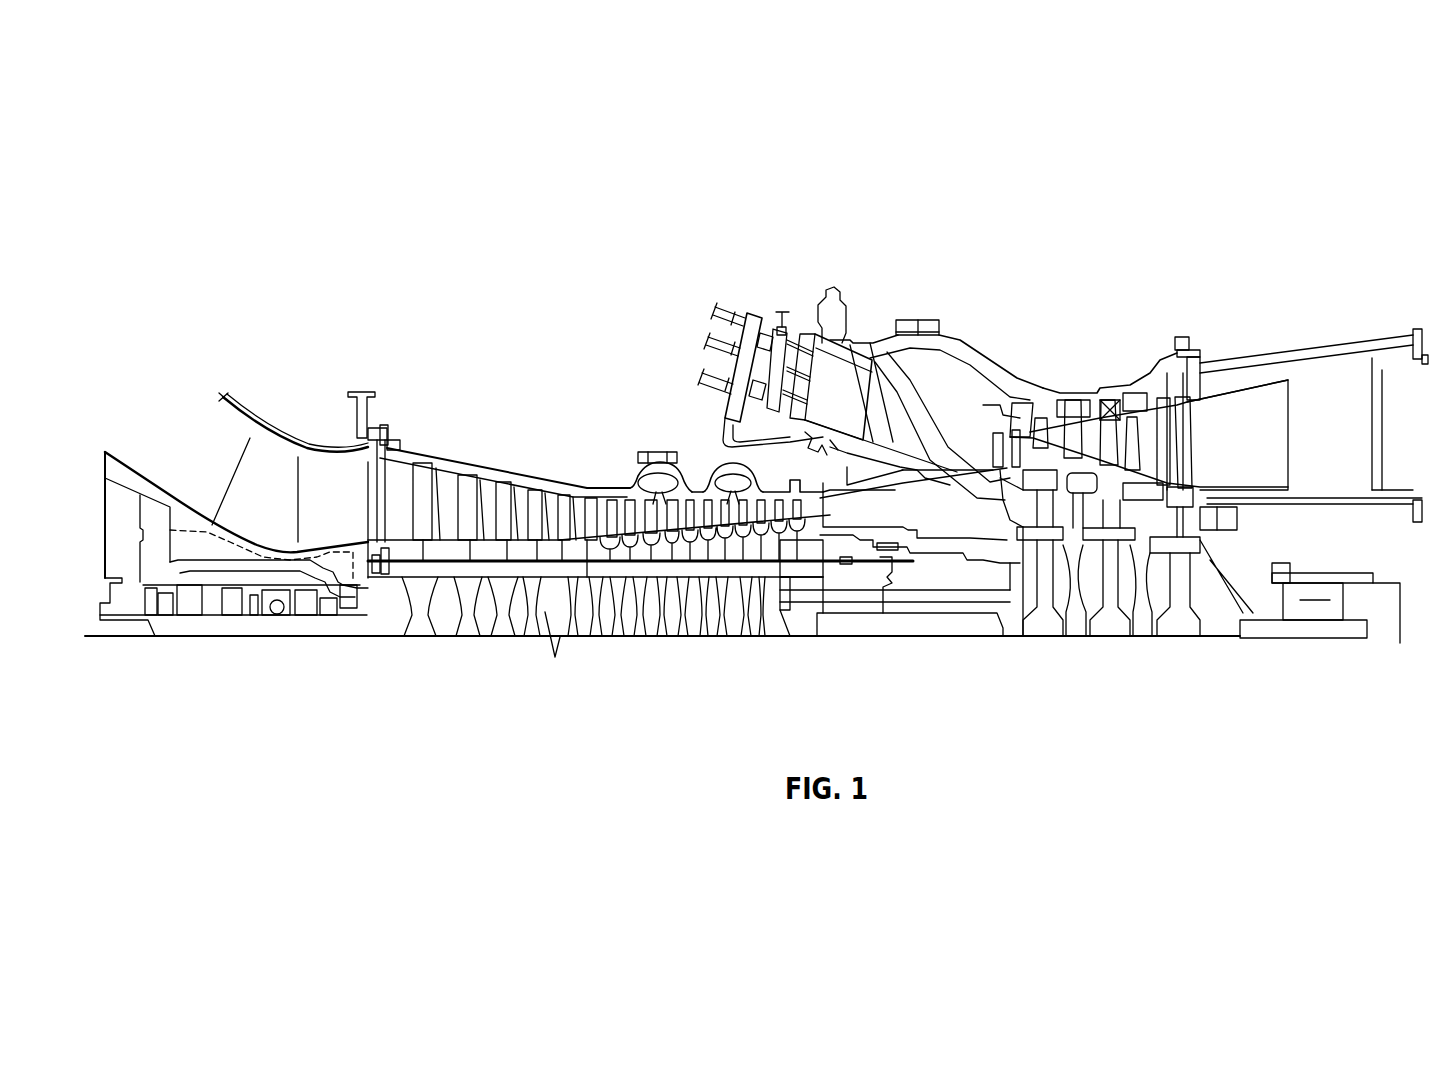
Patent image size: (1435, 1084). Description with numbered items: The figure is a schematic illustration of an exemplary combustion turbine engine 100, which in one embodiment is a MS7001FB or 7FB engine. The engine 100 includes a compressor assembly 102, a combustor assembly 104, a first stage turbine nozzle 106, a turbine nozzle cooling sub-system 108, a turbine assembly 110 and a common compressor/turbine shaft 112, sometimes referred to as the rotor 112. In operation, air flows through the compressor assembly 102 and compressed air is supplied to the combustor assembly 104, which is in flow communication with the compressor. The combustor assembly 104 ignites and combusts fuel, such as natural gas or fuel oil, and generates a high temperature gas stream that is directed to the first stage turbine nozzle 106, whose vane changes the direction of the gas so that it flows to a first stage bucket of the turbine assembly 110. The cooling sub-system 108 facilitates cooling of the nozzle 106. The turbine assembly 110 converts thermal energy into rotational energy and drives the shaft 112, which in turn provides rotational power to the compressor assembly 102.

The combustion turbine engine 100 is at (243, 216).
The compressor assembly 102 is at (503, 473).
The combustor assembly 104 is at (800, 337).
The first stage turbine nozzle 106 is at (1028, 432).
The turbine nozzle cooling sub-system 108 is at (1007, 468).
The turbine assembly 110 is at (1163, 377).
The common compressor/turbine shaft 112 is at (402, 582).